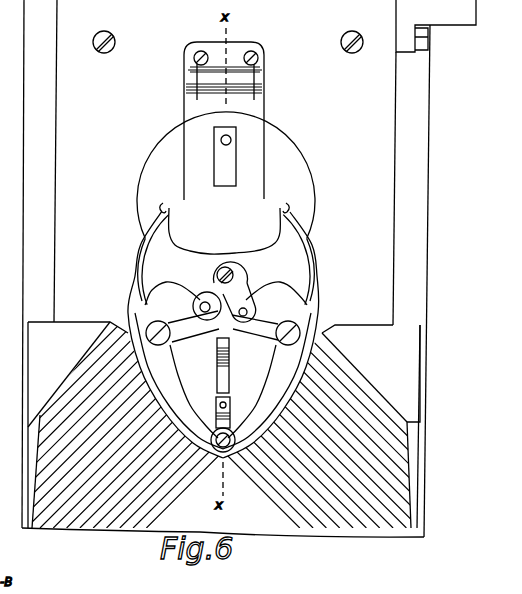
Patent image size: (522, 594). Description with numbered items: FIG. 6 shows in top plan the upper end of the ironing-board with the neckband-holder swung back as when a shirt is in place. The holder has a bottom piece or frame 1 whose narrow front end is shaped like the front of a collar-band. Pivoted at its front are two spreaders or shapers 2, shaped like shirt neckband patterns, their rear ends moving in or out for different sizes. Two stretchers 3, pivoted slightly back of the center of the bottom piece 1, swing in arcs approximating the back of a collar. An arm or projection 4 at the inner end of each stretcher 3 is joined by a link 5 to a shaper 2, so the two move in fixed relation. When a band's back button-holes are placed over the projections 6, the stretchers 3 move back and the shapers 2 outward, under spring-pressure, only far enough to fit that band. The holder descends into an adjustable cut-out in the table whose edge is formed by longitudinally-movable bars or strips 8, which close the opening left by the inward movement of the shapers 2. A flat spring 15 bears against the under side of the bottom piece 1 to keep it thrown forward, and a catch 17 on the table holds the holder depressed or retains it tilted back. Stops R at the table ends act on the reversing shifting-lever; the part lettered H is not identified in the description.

The bottom piece or frame 1 is at (226, 208).
The spreaders or shapers 2 is at (223, 335).
The stretchers 3 is at (226, 277).
The arm or projection 4 is at (201, 297).
The link 5 is at (205, 323).
The projections 6 is at (228, 201).
The longitudinally-movable bars or strips 8 is at (250, 398).
The flat spring 15 is at (225, 156).
The catch 17 is at (219, 344).
The frame member H is at (224, 328).
The stops R is at (429, 26).